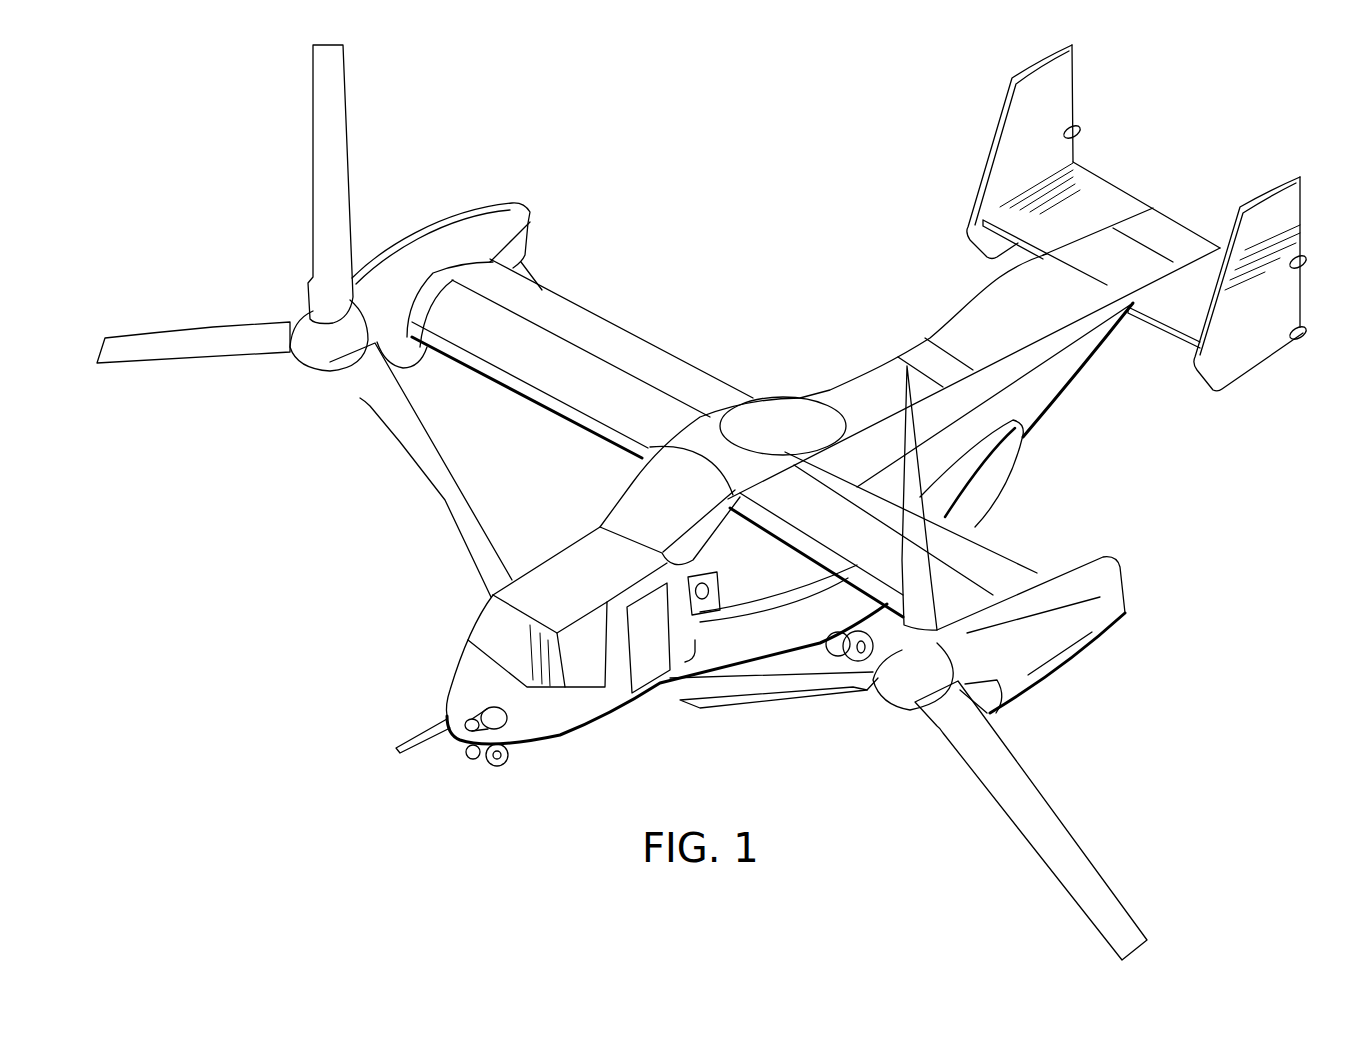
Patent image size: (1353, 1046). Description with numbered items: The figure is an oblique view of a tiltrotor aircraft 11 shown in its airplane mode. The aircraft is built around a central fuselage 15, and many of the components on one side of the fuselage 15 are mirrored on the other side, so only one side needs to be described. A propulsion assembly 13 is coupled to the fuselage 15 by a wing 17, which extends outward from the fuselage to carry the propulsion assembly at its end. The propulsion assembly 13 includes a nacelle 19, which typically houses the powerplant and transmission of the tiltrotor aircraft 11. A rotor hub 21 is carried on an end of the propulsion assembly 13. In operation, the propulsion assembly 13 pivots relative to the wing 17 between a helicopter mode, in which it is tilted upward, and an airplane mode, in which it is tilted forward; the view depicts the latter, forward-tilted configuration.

The tiltrotor aircraft 11 is at (207, 129).
The propulsion assembly 13 is at (1069, 690).
The fuselage 15 is at (452, 682).
The wing 17 is at (1000, 562).
The nacelle 19 is at (1097, 643).
The rotor hub 21 is at (890, 710).